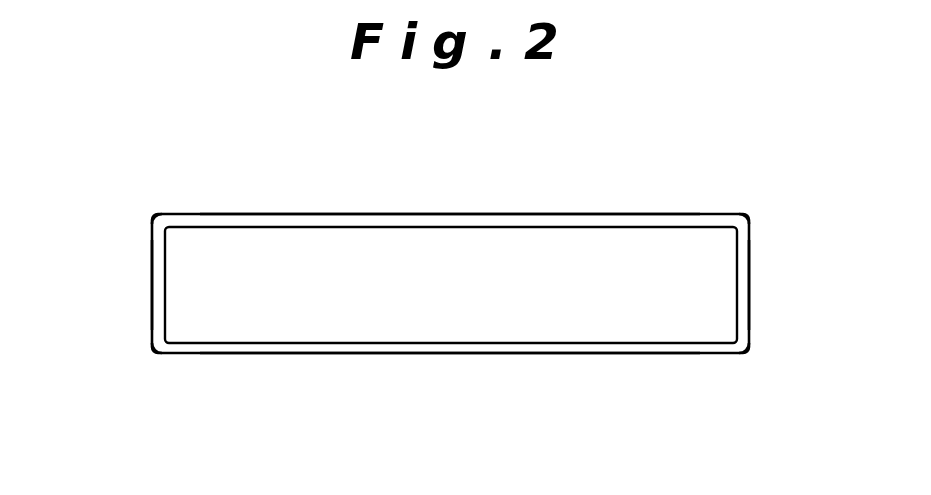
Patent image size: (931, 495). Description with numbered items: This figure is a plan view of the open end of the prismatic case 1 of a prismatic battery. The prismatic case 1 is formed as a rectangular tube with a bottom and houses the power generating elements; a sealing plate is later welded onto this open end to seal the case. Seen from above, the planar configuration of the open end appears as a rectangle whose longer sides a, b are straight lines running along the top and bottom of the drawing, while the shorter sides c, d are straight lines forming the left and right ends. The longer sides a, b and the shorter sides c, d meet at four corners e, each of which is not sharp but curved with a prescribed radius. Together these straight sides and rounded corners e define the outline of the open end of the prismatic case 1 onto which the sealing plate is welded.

The prismatic case 1 is at (298, 188).
The longer side a is at (441, 214).
The longer side b is at (410, 355).
The shorter side c is at (150, 278).
The shorter side d is at (751, 283).
The corner e is at (152, 215).